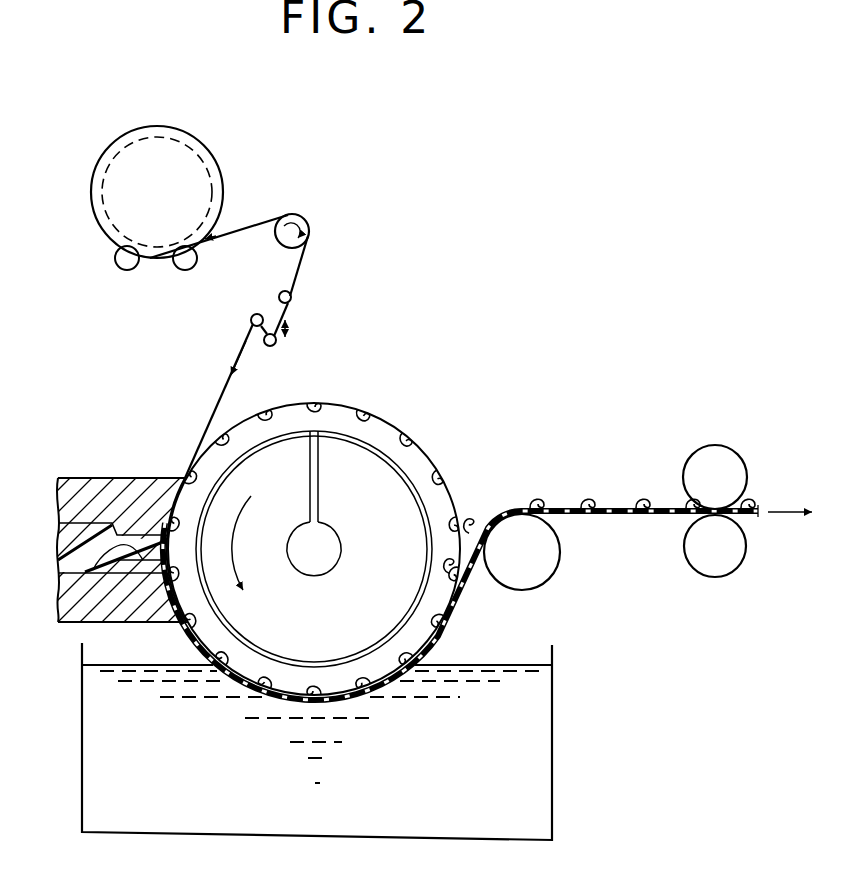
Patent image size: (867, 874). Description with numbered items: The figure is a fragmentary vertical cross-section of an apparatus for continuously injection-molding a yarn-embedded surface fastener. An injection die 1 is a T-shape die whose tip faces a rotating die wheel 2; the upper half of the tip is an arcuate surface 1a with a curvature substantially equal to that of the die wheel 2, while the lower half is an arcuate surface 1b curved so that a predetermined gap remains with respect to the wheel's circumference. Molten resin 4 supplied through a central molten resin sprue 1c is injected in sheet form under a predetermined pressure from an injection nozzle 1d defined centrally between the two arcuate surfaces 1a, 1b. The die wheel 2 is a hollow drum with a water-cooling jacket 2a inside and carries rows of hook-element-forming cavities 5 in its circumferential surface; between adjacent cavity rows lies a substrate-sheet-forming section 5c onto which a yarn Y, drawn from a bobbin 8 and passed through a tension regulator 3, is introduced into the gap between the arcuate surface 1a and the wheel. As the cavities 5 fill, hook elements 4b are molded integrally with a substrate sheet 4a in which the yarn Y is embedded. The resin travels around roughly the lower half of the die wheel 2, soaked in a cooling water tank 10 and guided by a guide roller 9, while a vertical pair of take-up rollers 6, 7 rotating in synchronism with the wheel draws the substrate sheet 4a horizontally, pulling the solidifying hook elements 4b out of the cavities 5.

The injection die 1 is at (88, 500).
The upper arcuate surface 1a is at (155, 510).
The lower arcuate surface 1b is at (163, 573).
The central molten resin sprue 1c is at (70, 618).
The injection nozzle 1d is at (177, 552).
The die wheel 2 is at (380, 437).
The water-cooling jacket 2a is at (400, 468).
The tension regulator 3 is at (297, 303).
The molten resin 4 is at (78, 548).
The substrate sheet 4a is at (597, 514).
The hook elements 4b is at (640, 496).
The hook-element-forming cavities 5 is at (368, 413).
The substrate-sheet-forming section 5c is at (382, 411).
The take-up roller 6 is at (725, 473).
The take-up roller 7 is at (733, 555).
The yarn supply package 8 is at (225, 177).
The guide roller 9 is at (547, 562).
The cooling water tank 10 is at (535, 752).
The yarn Y is at (297, 258).